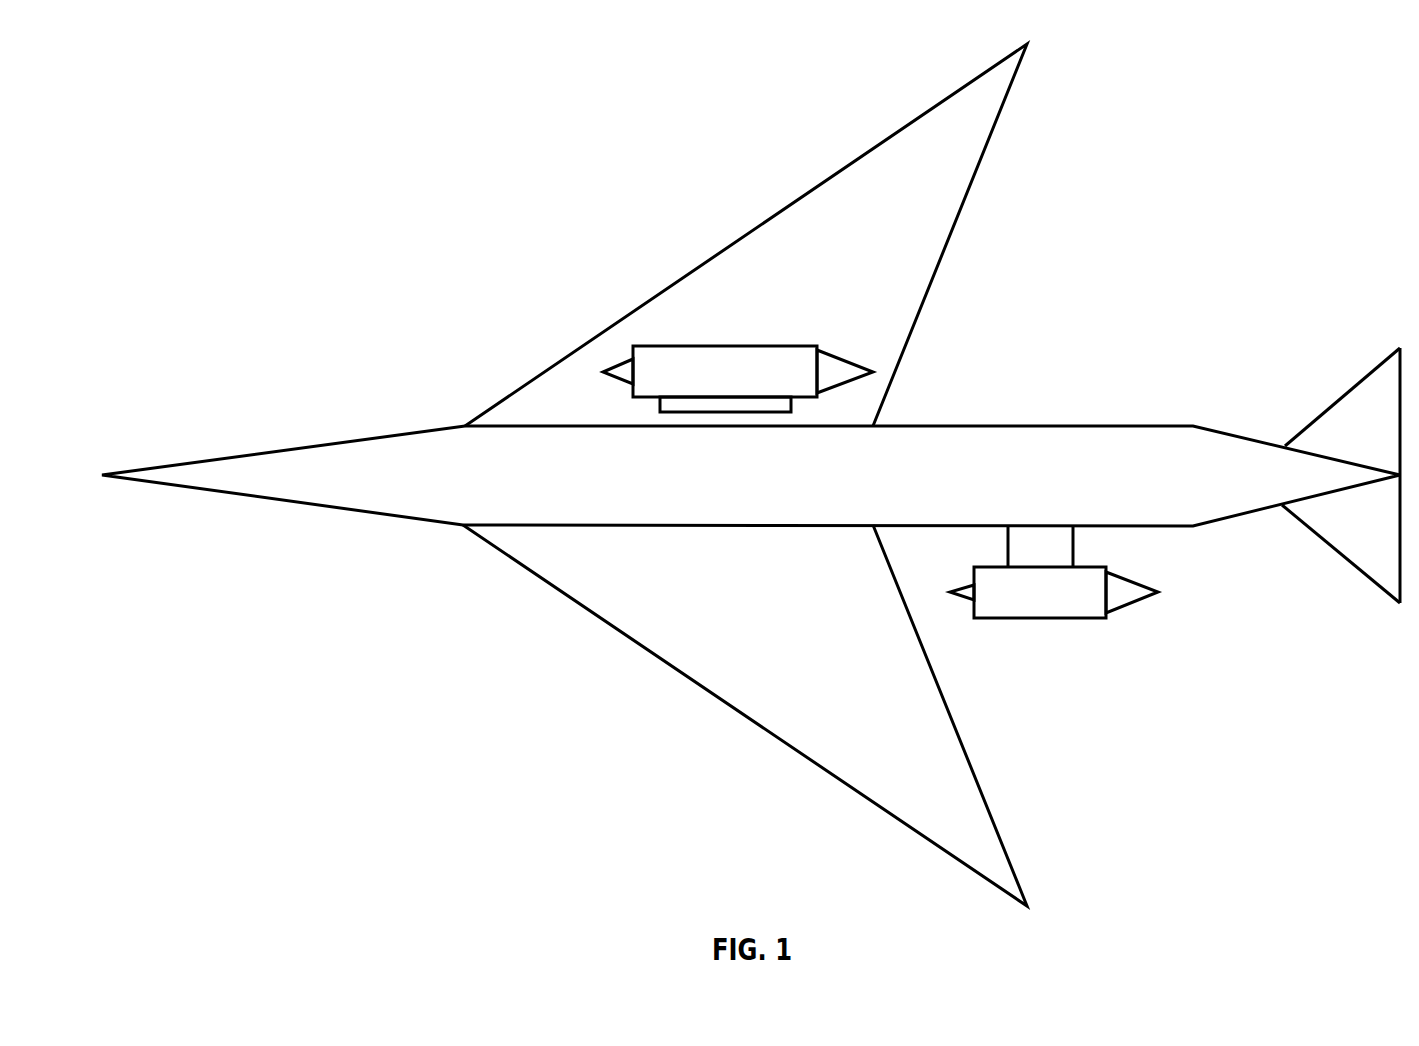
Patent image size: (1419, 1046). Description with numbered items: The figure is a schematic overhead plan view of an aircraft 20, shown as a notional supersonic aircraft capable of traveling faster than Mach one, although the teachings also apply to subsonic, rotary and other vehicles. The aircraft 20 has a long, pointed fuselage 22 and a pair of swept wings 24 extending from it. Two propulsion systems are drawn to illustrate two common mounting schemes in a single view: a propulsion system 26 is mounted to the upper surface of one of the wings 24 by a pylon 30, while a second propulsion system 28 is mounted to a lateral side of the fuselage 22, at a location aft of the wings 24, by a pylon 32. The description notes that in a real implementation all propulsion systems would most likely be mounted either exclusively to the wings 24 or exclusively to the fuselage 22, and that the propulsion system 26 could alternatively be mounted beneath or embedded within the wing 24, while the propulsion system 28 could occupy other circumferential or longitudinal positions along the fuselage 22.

The aircraft 20 is at (443, 249).
The fuselage 22 is at (965, 426).
The wings 24 is at (548, 366).
The propulsion system 26 is at (760, 338).
The propulsion system 28 is at (1056, 623).
The pylon 30 is at (658, 403).
The pylon 32 is at (1073, 533).